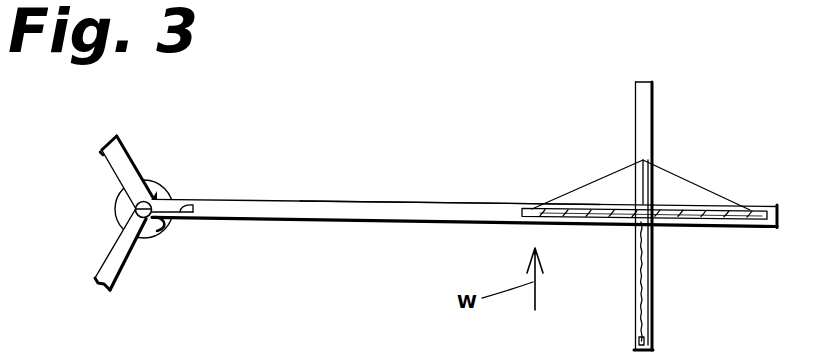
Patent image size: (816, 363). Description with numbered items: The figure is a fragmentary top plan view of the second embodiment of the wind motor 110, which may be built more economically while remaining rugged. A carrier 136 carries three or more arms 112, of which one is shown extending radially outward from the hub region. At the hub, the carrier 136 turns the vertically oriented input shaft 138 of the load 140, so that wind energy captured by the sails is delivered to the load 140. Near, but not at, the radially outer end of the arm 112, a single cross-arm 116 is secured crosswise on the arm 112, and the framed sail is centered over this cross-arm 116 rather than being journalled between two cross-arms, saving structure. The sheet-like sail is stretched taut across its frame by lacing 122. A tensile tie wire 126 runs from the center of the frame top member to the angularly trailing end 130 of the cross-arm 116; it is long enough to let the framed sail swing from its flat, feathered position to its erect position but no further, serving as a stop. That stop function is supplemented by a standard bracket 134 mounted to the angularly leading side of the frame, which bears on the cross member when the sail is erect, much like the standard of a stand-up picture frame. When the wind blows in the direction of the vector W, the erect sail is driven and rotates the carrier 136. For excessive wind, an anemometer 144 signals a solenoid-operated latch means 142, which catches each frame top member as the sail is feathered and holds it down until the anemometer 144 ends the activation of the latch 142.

The wind motor 110 is at (338, 170).
The arm 112 is at (392, 208).
The cross-arm 116 is at (645, 270).
The lacing 122 is at (736, 221).
The tensile tie wire 126 is at (645, 302).
The angularly trailing end 130 is at (648, 350).
The standard bracket 134 is at (683, 178).
The carrier 136 is at (337, 228).
The input shaft 138 is at (140, 208).
The load 140 is at (158, 233).
The latch means 142 is at (637, 339).
The anemometer 144 is at (163, 206).